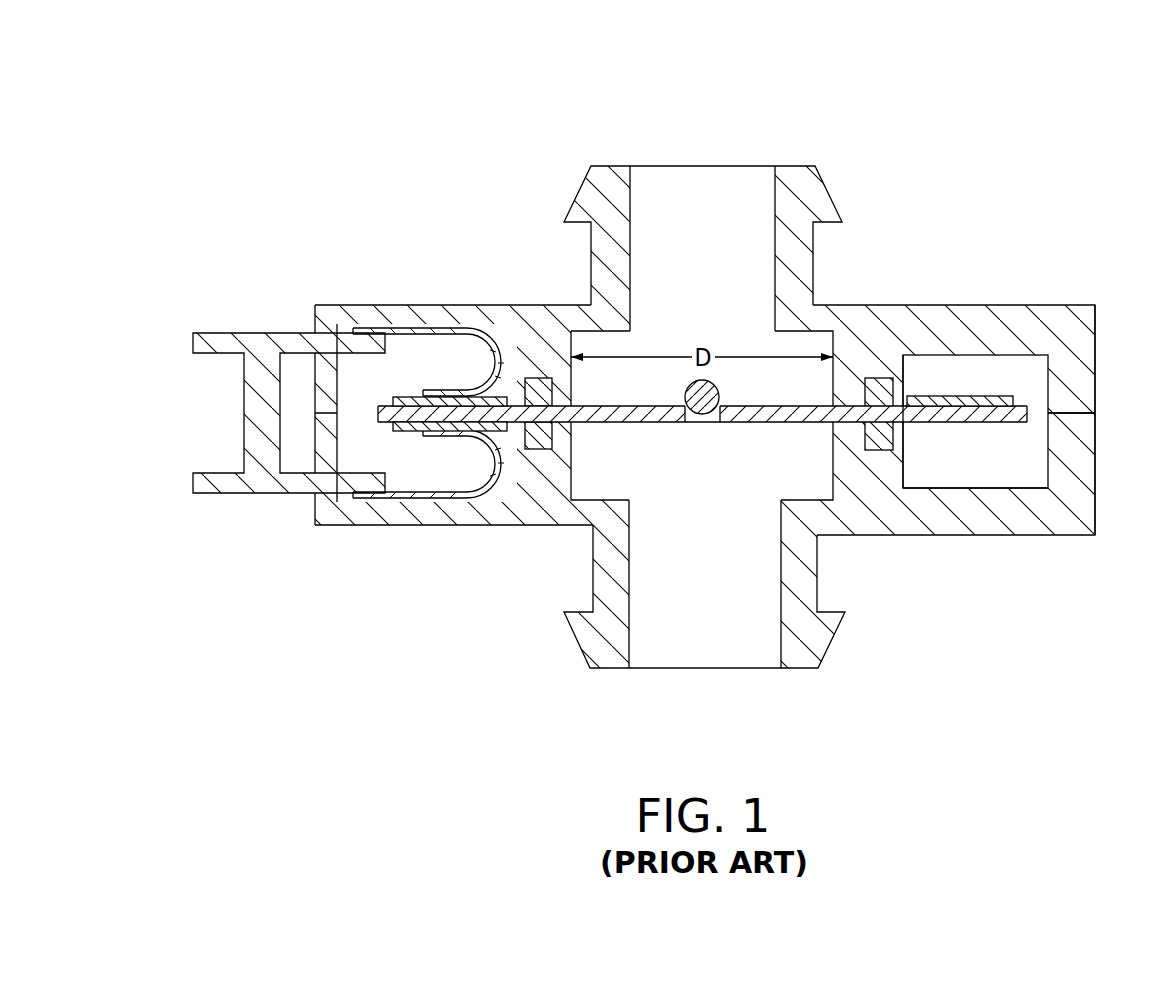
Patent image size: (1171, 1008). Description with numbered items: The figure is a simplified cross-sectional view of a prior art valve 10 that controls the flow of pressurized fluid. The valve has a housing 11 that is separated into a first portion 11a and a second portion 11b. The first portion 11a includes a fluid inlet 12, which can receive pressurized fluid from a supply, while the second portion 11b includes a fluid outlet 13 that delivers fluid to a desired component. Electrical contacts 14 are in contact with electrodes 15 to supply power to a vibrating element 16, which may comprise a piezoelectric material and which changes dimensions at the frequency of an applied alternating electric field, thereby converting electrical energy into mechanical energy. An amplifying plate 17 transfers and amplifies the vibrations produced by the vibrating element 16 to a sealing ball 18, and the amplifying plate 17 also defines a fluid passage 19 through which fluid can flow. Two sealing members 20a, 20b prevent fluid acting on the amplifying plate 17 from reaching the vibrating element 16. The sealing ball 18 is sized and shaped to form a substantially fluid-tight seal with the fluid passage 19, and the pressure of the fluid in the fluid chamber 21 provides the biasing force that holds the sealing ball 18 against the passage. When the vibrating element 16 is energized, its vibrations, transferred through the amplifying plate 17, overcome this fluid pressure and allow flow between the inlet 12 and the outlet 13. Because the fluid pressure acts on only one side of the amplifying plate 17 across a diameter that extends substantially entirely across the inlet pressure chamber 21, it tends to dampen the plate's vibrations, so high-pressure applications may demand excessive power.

The prior art valve 10 is at (1001, 131).
The housing 11 is at (1105, 376).
The first portion 11a is at (1012, 305).
The second portion 11b is at (1048, 535).
The fluid inlet 12 is at (753, 160).
The fluid outlet 13 is at (759, 682).
The electrical contacts 14 is at (230, 333).
The electrodes 15 is at (413, 331).
The vibrating element 16 is at (925, 430).
The amplifying plate 17 is at (925, 430).
The sealing ball 18 is at (721, 389).
The fluid passage 19 is at (703, 436).
The sealing member 20a is at (540, 378).
The sealing member 20b is at (527, 450).
The fluid chamber 21 is at (623, 348).